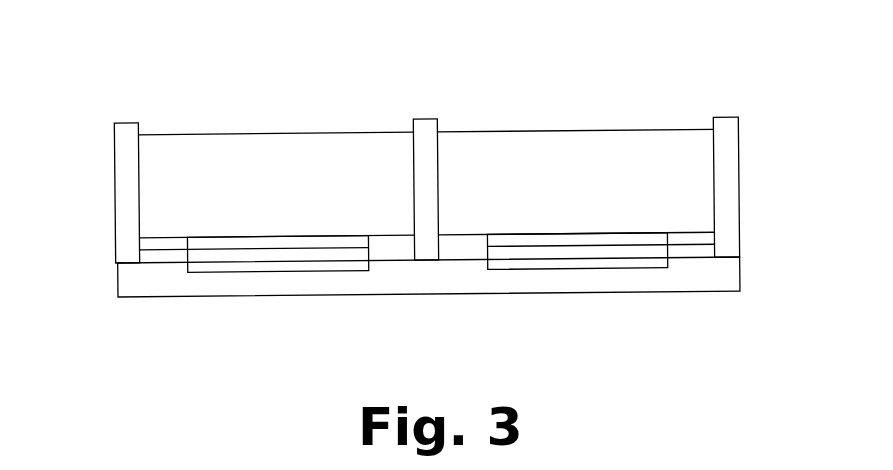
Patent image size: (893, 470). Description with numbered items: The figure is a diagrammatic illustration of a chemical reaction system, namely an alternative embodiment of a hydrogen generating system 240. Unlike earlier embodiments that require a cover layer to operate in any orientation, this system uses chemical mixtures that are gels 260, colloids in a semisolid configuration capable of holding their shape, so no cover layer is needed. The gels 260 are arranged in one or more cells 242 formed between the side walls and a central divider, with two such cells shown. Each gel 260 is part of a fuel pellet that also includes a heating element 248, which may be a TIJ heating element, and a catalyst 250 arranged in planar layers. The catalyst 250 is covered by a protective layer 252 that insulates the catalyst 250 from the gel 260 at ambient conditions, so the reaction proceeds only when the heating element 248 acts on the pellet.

The hydrogen generating system 240 is at (690, 68).
The cells 242 is at (138, 152).
The heating element 248 is at (272, 260).
The catalyst 250 is at (190, 252).
The protective layer 252 is at (215, 237).
The gels 260 is at (300, 200).